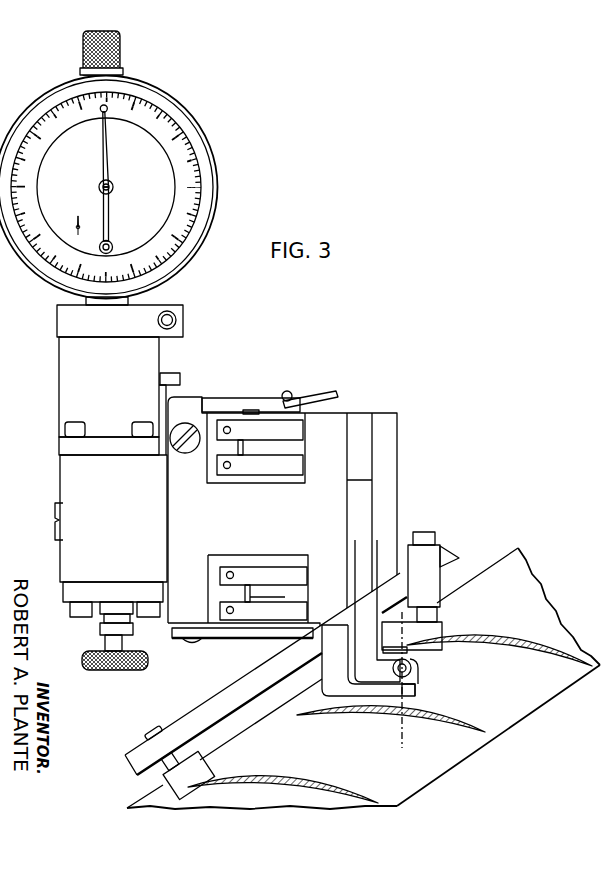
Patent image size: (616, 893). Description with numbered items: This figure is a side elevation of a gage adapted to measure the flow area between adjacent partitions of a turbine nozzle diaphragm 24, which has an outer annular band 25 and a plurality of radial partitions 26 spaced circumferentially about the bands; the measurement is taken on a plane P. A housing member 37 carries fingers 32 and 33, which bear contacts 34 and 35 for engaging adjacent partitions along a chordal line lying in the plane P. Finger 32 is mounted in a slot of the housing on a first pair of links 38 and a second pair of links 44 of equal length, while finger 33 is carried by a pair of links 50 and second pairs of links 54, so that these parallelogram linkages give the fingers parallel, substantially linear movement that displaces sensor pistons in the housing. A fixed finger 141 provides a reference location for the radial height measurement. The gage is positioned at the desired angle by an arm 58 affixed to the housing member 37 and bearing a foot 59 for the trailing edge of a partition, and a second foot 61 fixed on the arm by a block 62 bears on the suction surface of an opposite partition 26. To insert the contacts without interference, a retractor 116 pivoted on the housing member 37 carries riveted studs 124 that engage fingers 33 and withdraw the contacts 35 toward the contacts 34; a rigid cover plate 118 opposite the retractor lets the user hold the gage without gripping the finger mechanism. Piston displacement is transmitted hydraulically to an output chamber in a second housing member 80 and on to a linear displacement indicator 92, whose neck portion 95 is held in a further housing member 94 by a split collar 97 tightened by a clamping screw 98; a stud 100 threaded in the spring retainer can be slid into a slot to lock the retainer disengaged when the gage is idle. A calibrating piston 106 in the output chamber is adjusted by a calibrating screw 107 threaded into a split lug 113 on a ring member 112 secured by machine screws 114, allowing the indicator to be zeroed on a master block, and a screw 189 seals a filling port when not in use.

The linear displacement indicator 92 is at (217, 180).
The neck portion 95 is at (86, 300).
The split collar 97 is at (57, 320).
The clamping screw 98 is at (177, 320).
The housing member 94 is at (92, 396).
The stud 100 is at (181, 380).
The second housing member 80 is at (122, 526).
The screw 189 is at (55, 520).
The ring member 112 is at (148, 600).
The calibrating piston 106 is at (100, 602).
The machine screws 114 is at (78, 613).
The split lug 113 is at (100, 630).
The calibrating screw 107 is at (98, 670).
The housing member 37 is at (272, 526).
The retractor 116 is at (232, 398).
The riveted studs 124 is at (303, 397).
The second pair of links 54 is at (274, 440).
The second pair of links 44 is at (274, 475).
The pair of links 50 is at (278, 585).
The first pair of links 38 is at (278, 620).
The rigid cover plate 118 is at (247, 637).
The arm 58 is at (215, 707).
The foot 59 is at (205, 767).
The finger 32 is at (345, 659).
The finger 141 is at (377, 611).
The finger 33 is at (416, 664).
The contact 35 is at (412, 649).
The contact 34 is at (417, 697).
The second foot 61 is at (423, 643).
The block 62 is at (433, 584).
The plane P is at (400, 733).
The turbine nozzle diaphragm 24 is at (470, 766).
The outer annular band 25 is at (425, 786).
The radial partitions 26 is at (340, 786).